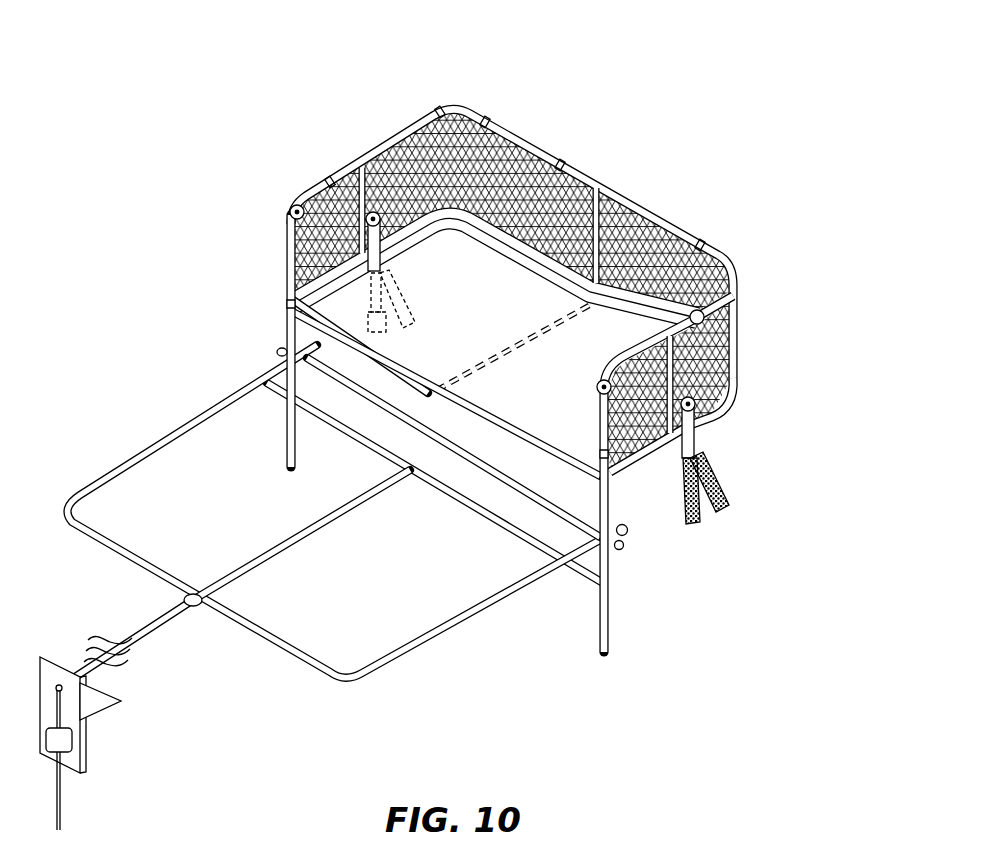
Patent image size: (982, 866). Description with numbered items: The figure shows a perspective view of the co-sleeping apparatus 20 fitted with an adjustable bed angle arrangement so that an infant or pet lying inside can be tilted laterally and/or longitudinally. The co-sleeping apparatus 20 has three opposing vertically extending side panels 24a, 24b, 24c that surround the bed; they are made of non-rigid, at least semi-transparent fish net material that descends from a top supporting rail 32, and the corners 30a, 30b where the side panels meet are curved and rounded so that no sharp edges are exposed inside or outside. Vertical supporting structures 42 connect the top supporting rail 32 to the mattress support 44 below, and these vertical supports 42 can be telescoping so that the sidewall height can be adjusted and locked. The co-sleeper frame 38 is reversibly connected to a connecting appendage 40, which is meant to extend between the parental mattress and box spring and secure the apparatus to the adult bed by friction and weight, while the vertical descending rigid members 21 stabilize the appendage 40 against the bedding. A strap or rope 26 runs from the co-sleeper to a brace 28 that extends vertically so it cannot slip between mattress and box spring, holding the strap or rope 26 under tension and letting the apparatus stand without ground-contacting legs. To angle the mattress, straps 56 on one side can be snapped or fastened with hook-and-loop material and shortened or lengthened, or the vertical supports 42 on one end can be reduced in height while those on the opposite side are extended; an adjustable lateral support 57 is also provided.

The co-sleeping apparatus 20 is at (682, 110).
The vertical descending rigid members 21 is at (287, 437).
The side panel 24a is at (398, 160).
The side panel 24b is at (674, 266).
The side panel 24c is at (740, 404).
The strap or rope 26 is at (143, 640).
The brace 28 is at (97, 743).
The corner 30a is at (450, 92).
The corner 30b is at (752, 268).
The top supporting rail 32 is at (545, 150).
The co-sleeper frame 38 is at (760, 380).
The connecting appendage 40 is at (132, 440).
The vertical supporting structures 42 is at (345, 160).
The mattress support 44 is at (712, 430).
The straps 56 is at (368, 300).
The lateral support 57 is at (528, 328).